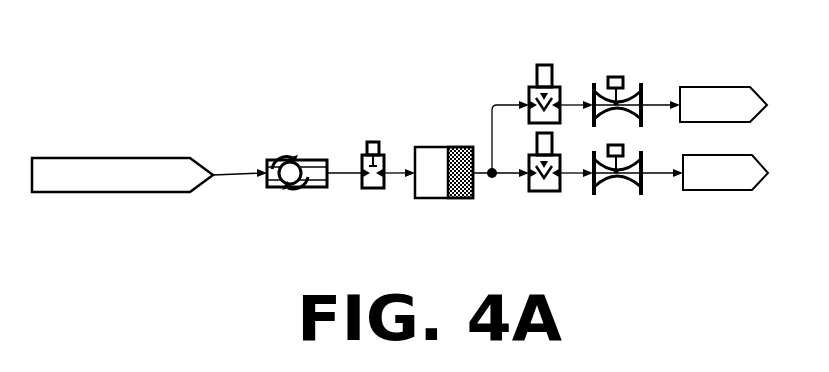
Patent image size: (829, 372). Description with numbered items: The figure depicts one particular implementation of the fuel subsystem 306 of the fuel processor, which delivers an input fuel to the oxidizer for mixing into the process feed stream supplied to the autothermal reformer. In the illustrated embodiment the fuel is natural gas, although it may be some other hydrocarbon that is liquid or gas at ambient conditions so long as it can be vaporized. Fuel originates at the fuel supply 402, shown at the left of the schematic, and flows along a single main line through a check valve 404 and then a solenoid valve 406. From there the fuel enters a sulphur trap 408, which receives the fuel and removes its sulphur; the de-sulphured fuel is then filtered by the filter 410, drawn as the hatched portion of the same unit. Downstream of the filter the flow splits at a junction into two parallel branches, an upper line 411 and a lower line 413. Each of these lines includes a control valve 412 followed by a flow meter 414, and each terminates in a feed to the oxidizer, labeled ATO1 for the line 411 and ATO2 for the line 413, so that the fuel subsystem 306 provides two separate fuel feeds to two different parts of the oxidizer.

The fuel subsystem 306 is at (141, 73).
The fuel supply 402 is at (132, 157).
The check valve 404 is at (302, 162).
The solenoid valve 406 is at (368, 190).
The sulphur trap 408 is at (428, 147).
The filter 410 is at (457, 198).
The line 411 is at (652, 102).
The control valve 412 is at (530, 87).
The line 413 is at (655, 175).
The flow meter 414 is at (595, 80).